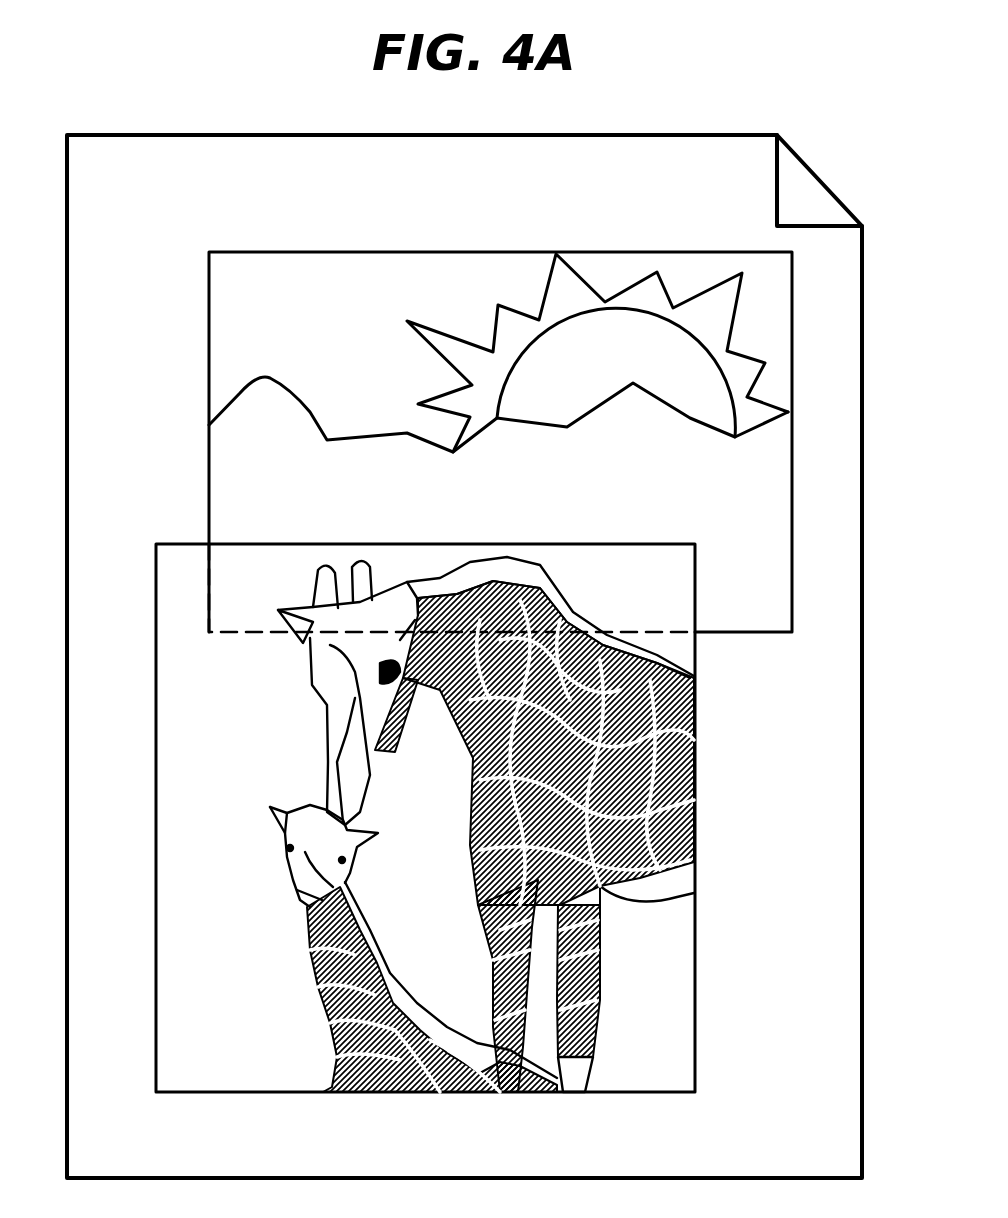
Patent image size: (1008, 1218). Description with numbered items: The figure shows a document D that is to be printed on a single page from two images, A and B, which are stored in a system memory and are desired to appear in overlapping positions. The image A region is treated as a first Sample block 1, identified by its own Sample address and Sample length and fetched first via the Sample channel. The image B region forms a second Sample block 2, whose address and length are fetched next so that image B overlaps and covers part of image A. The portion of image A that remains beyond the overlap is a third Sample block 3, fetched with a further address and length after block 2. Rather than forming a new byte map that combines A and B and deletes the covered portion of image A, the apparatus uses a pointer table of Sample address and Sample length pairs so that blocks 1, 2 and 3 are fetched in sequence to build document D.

The Address 1 / Length 1 of Sample A 1 is at (198, 233).
The Address 2 / Length 2 of Sample B 2 is at (147, 526).
The Address 3 / Length 3 of Sample A 3 is at (724, 548).
The document D is at (663, 133).